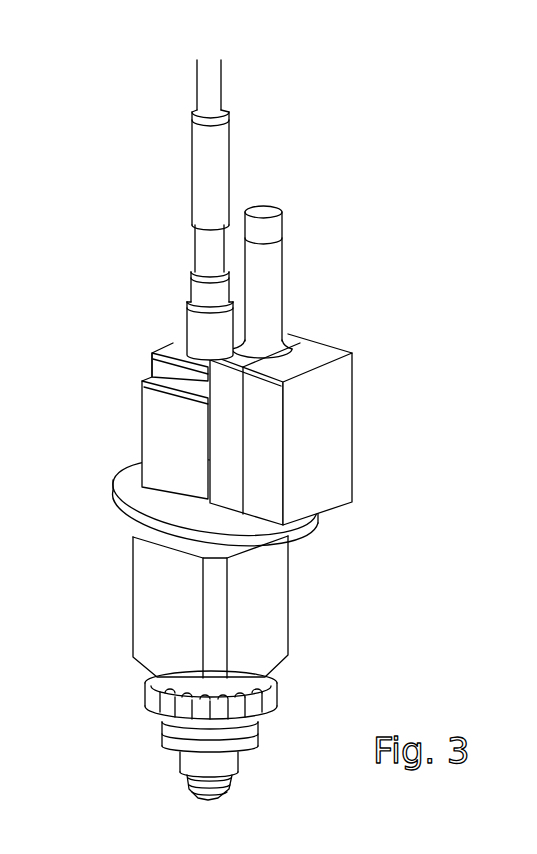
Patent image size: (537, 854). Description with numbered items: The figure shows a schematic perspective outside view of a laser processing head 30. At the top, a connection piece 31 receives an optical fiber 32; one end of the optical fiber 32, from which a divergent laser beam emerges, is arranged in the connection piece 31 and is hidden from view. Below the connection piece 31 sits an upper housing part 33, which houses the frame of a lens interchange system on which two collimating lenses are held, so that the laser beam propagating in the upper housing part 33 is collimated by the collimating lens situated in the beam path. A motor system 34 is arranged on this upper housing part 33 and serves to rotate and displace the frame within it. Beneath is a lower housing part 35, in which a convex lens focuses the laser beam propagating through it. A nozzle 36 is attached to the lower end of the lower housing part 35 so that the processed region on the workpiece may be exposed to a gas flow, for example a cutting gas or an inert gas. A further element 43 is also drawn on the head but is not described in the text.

The laser processing head 30 is at (246, 430).
The connection piece 31 is at (200, 337).
The optical fiber 32 is at (215, 97).
The upper housing part 33 is at (163, 435).
The motor system 34 is at (330, 450).
The lower housing part 35 is at (150, 617).
The nozzle 36 is at (200, 795).
The cylindrical pin 43 is at (263, 317).